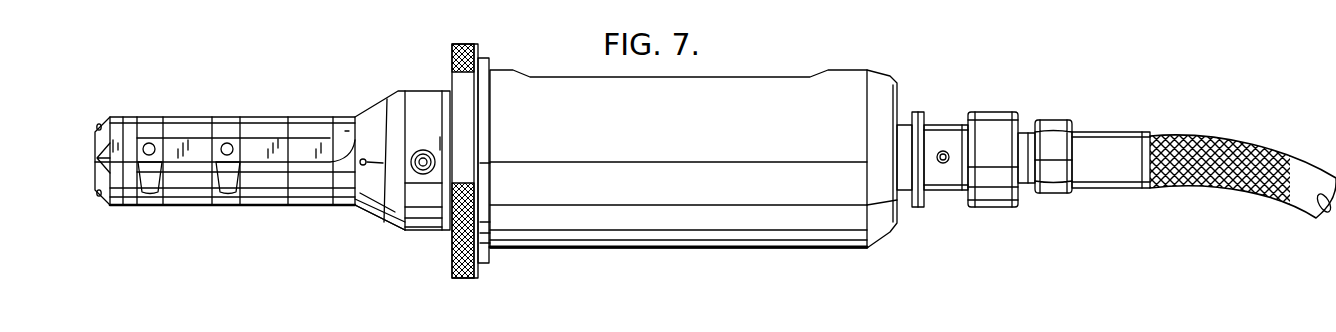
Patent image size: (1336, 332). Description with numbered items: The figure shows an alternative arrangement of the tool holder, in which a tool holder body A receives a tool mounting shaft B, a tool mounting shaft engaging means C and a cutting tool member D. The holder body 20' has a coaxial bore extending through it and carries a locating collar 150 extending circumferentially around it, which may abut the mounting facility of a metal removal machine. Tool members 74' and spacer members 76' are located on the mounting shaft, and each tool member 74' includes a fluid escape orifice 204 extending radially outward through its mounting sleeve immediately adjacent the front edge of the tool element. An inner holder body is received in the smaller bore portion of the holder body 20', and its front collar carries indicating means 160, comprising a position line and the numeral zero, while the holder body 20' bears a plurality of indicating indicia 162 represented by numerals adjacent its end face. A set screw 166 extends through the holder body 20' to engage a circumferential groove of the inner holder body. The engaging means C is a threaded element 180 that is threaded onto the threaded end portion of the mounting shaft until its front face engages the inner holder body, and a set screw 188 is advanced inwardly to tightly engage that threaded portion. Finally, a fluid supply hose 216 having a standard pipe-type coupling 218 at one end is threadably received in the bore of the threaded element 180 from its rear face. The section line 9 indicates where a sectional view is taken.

The section line 9- 9 is at (150, 110).
The tool mounting shaft B is at (93, 156).
The cutting tool member D is at (176, 215).
The fluid escape orifice 204 is at (153, 142).
The tool member 74' is at (225, 142).
The spacer member 76' is at (232, 142).
The indicating means 160 is at (382, 170).
The indicating indicia 162 is at (378, 206).
The set screw 166 is at (423, 150).
The locating collar 150 is at (478, 44).
The holder body 20' is at (693, 143).
The tool holder body A is at (815, 66).
The tool mounting shaft engaging means C is at (938, 108).
The set screw 188 is at (943, 165).
The threaded element 180 is at (978, 192).
The pipe-type coupling 218 is at (1060, 132).
The fluid supply hose 216 is at (1275, 150).